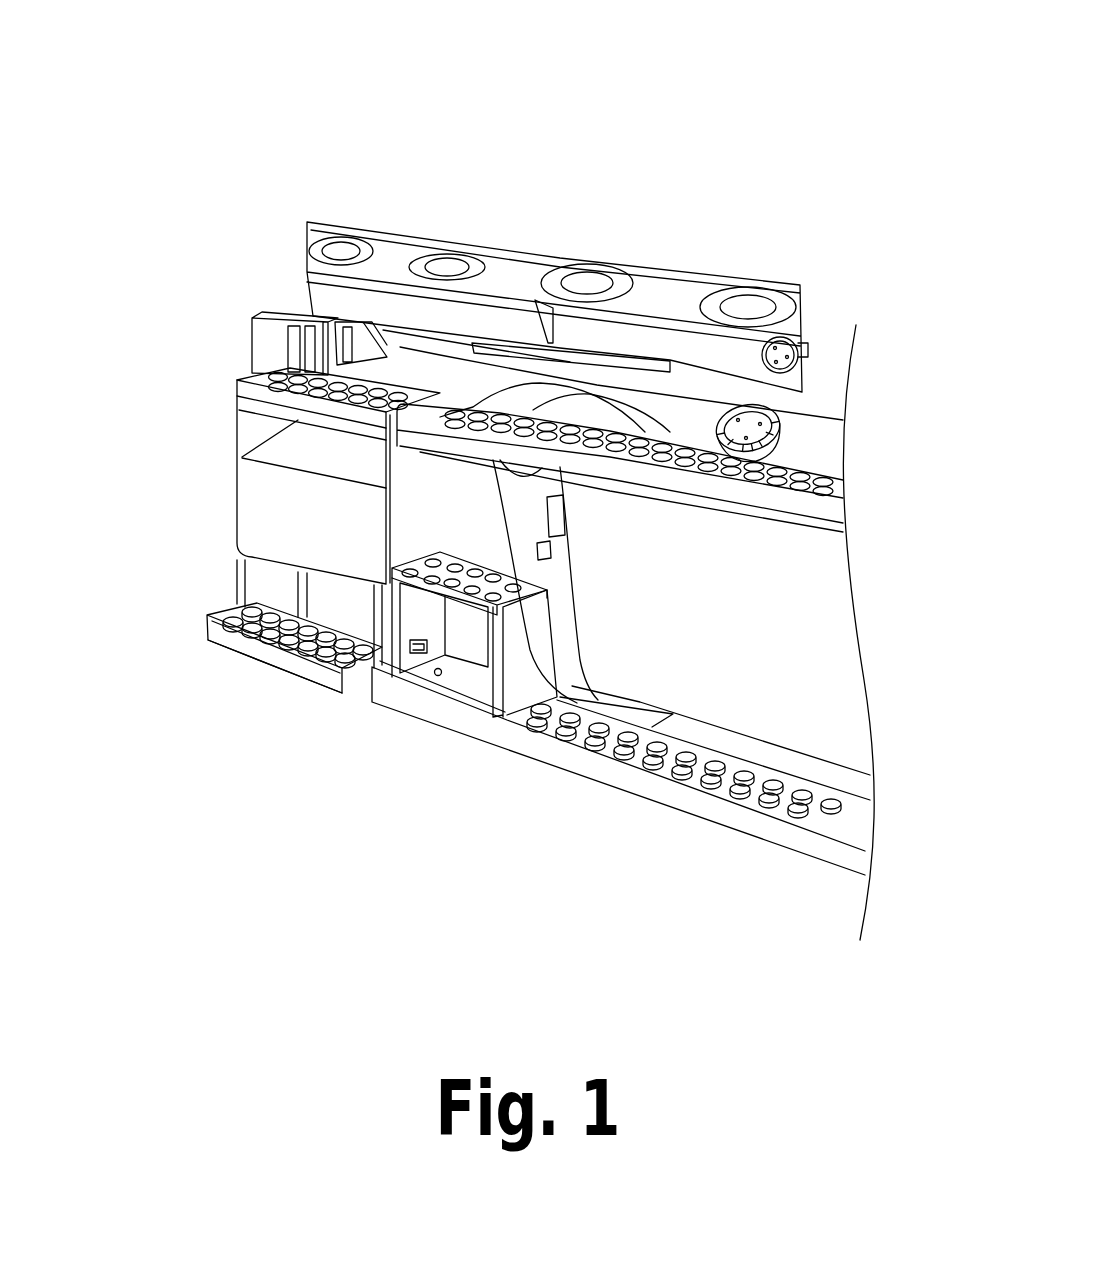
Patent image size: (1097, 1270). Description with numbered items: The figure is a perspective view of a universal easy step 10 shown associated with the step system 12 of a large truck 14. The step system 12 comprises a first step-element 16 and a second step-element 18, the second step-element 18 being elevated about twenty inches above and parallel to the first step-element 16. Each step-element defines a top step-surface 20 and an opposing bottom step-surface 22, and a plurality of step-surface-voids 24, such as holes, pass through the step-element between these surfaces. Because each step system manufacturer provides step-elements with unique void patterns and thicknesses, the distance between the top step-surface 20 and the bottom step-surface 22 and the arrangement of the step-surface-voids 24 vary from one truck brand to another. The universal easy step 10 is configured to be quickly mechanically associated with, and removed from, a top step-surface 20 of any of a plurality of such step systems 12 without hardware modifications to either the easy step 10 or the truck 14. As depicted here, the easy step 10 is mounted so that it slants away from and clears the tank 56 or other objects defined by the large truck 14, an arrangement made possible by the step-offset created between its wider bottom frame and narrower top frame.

The universal easy step 10 is at (540, 666).
The step system 12 is at (264, 406).
The large truck 14 is at (398, 208).
The first step-element 16 is at (207, 636).
The second step-element 18 is at (236, 396).
The top step-surface 20 is at (440, 412).
The bottom step-surface 22 is at (300, 684).
The step-surface-voids 24 is at (667, 442).
The tank 56 is at (773, 667).